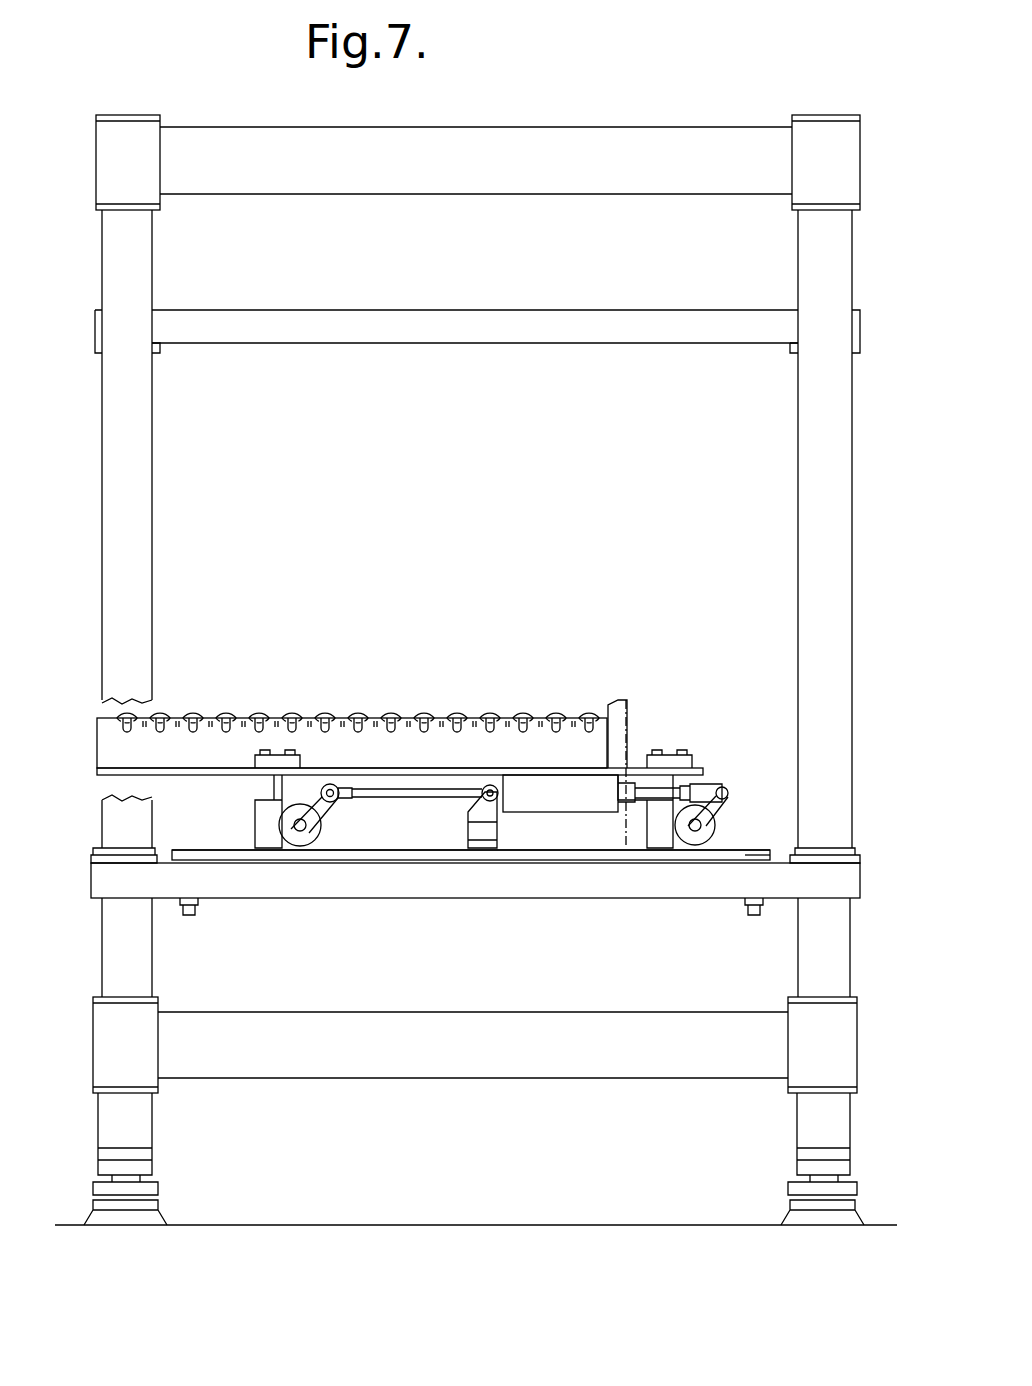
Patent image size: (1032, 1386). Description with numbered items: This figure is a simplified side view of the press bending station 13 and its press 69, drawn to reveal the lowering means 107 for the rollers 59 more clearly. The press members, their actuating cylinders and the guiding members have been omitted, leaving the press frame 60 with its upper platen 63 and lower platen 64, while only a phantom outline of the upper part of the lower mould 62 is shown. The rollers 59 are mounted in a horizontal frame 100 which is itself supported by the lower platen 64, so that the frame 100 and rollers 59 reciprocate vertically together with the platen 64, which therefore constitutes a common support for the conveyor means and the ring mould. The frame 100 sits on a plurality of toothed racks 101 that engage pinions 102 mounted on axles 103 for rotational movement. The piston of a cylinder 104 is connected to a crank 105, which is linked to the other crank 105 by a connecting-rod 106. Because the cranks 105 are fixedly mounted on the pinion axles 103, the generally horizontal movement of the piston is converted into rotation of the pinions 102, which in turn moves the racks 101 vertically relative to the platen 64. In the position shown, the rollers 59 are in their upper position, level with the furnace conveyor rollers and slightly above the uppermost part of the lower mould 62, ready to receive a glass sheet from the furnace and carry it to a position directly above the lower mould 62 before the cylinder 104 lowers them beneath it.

The press bending station 13 is at (461, 112).
The rollers 59 is at (193, 716).
The press frame 60 is at (245, 160).
The lower mould 62 is at (640, 706).
The platen 63 is at (636, 318).
The lower platen 64 is at (586, 880).
The press 69 is at (547, 120).
The horizontal frame 100 is at (185, 752).
The toothed racks 101 is at (270, 790).
The pinions 102 is at (318, 835).
The axles 103 is at (305, 840).
The cylinder 104 is at (540, 798).
The crank 105 is at (330, 805).
The connecting-rod 106 is at (427, 792).
The lowering means 107 is at (778, 795).